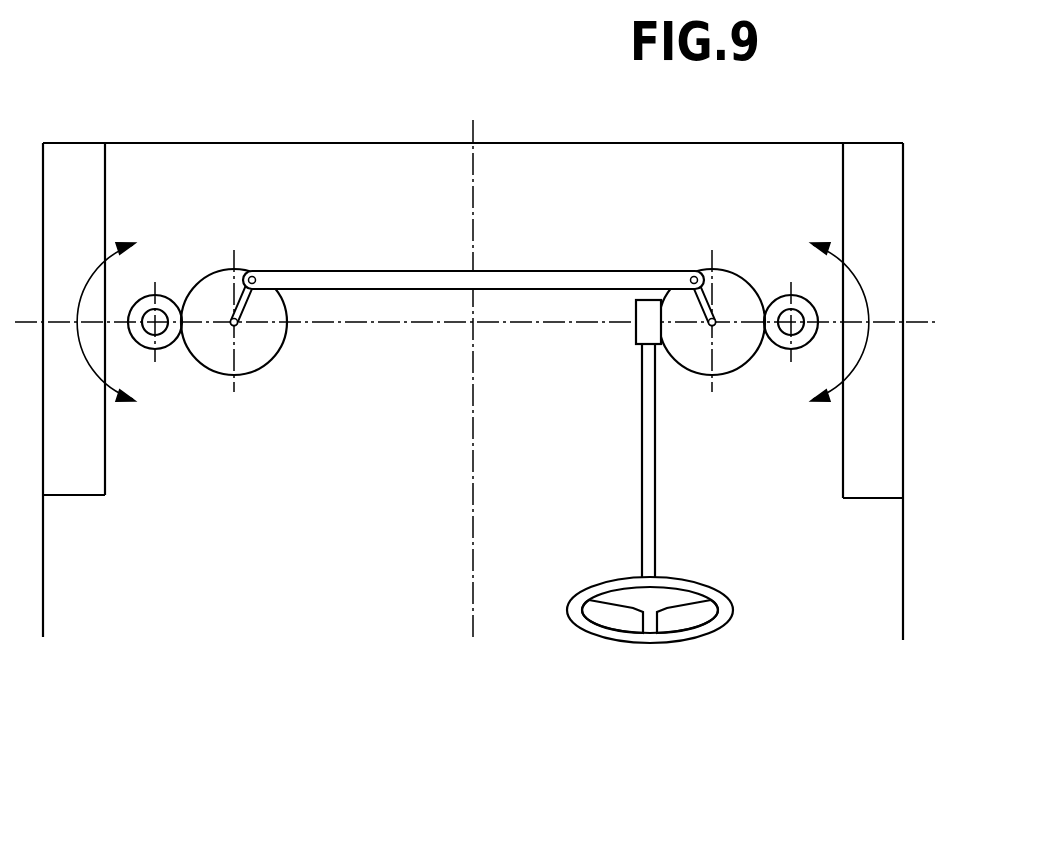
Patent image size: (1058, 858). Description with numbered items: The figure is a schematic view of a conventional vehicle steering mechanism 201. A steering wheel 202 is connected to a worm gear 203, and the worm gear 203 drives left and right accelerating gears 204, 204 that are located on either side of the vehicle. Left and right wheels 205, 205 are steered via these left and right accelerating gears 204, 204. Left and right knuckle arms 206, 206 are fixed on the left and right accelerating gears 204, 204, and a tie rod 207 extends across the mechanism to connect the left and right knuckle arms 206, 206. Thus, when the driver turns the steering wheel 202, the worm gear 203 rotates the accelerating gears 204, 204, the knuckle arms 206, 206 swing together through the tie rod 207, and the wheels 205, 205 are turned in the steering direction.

The vehicle steering mechanism 201 is at (430, 234).
The steering wheel 202 is at (700, 635).
The worm gear 203 is at (635, 344).
The accelerating gear 204 is at (172, 338).
The wheel 205 is at (97, 497).
The knuckle arm 206 is at (235, 297).
The tie rod 207 is at (585, 270).